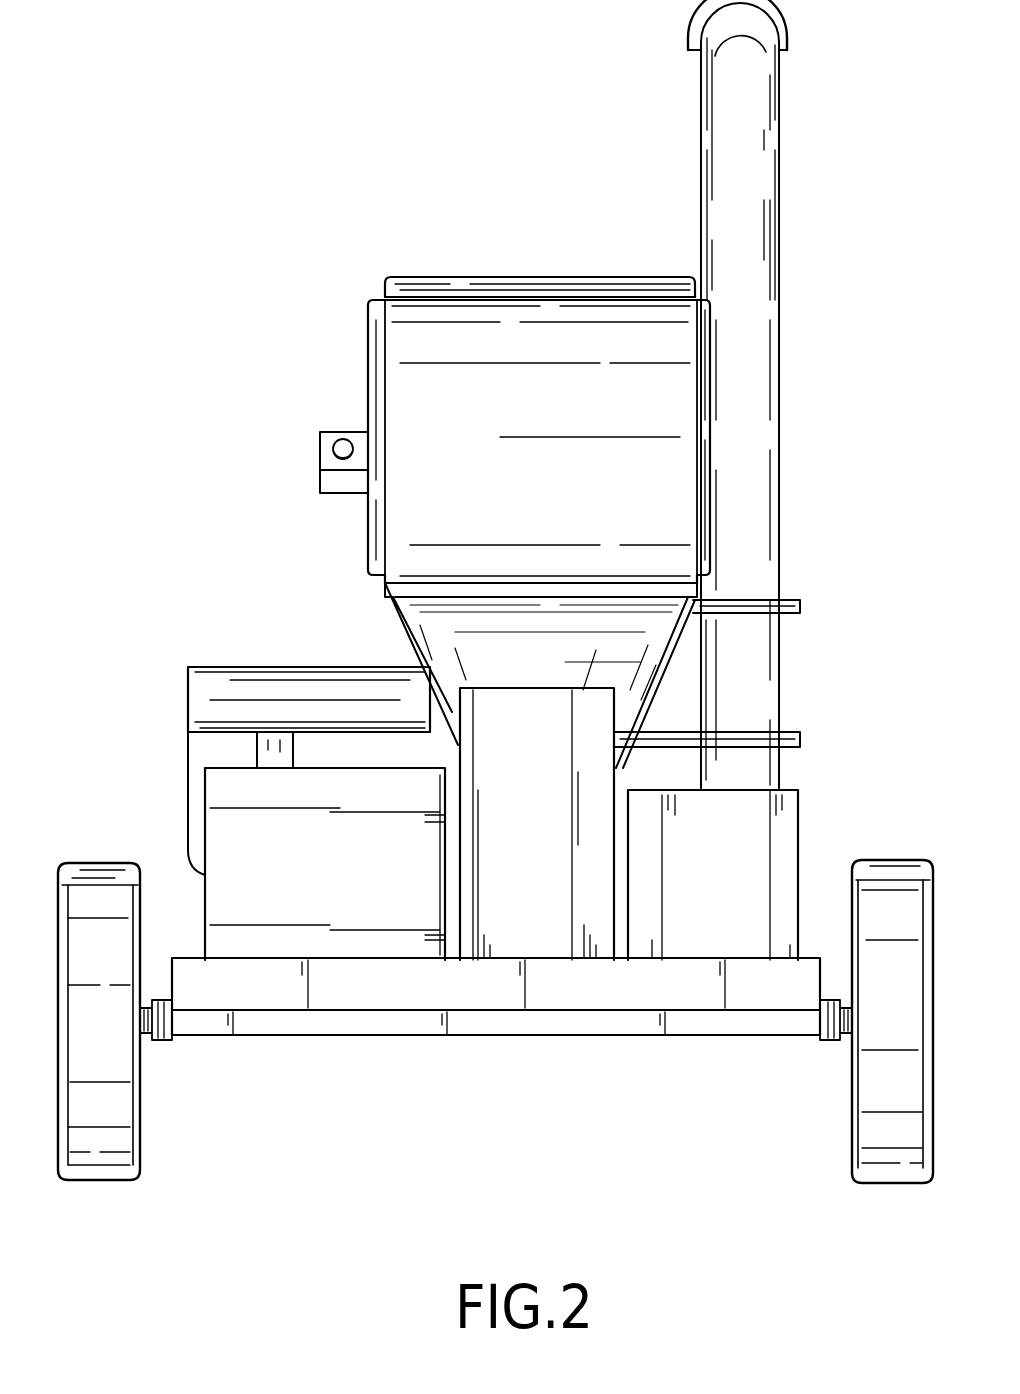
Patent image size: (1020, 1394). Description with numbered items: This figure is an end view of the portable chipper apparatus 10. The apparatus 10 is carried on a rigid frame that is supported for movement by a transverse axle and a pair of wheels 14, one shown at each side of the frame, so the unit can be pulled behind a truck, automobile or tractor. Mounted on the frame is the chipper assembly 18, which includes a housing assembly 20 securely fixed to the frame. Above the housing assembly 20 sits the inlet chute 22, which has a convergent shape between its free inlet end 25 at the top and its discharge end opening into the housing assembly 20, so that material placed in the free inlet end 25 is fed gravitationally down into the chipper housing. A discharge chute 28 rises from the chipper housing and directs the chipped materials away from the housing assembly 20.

The portable chipper apparatus 10 is at (247, 540).
The wheels 14 is at (117, 1092).
The chipper assembly 18 is at (818, 703).
The housing assembly 20 is at (822, 597).
The inlet chute 22 is at (376, 340).
The free inlet end 25 is at (508, 310).
The discharge chute 28 is at (762, 228).